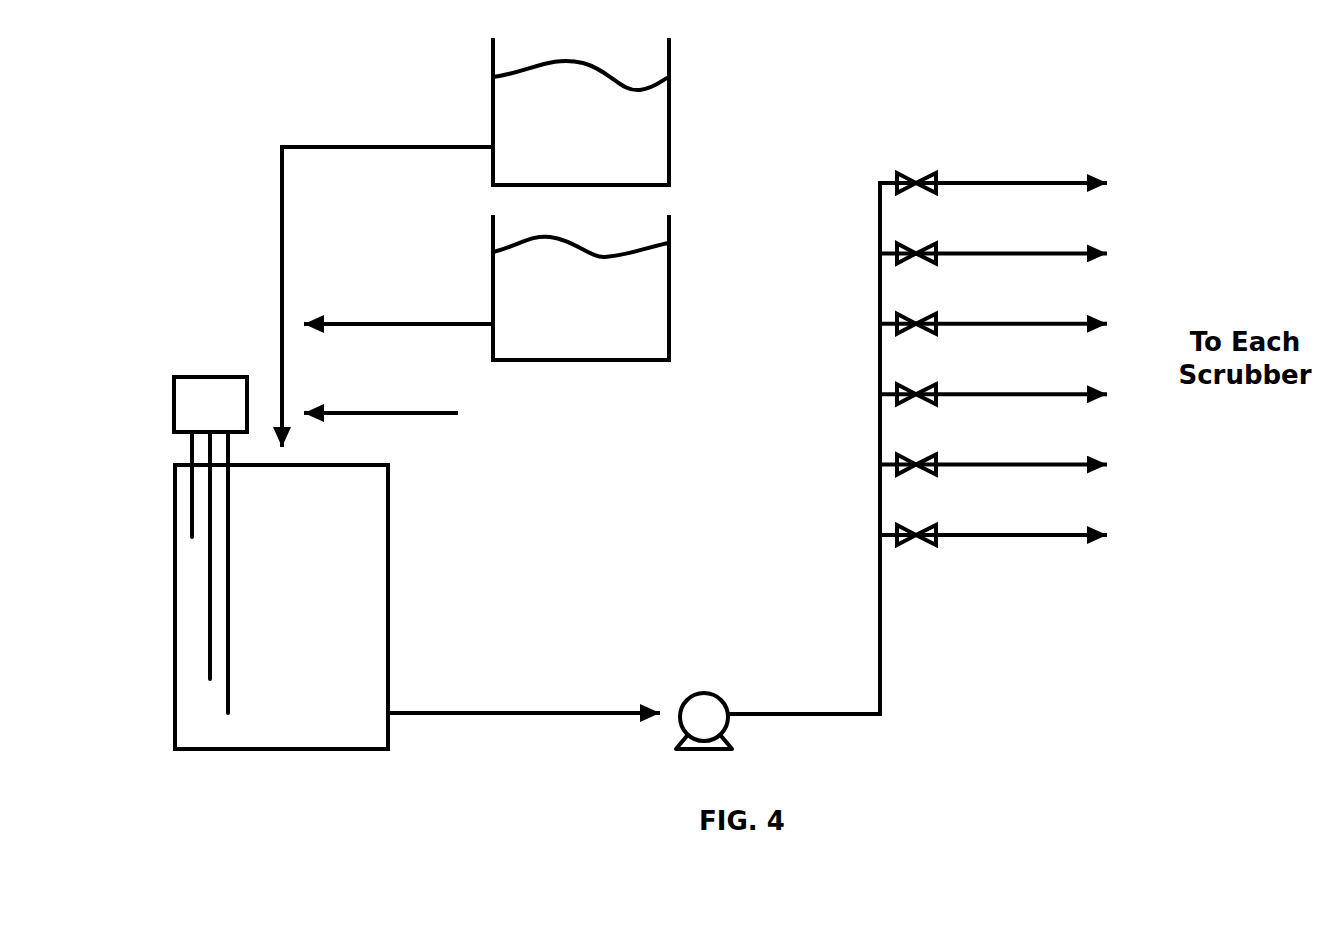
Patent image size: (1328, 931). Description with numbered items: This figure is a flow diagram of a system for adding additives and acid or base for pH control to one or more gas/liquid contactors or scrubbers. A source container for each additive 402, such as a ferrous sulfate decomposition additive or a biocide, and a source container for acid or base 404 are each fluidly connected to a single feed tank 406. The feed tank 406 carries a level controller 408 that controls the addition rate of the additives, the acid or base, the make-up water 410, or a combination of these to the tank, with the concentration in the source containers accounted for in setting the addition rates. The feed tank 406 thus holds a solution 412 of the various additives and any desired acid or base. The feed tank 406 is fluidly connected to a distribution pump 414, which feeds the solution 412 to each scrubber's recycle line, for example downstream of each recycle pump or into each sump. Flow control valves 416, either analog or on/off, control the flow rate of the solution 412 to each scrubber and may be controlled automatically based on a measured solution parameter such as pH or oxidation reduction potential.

The additive source container 402 is at (669, 147).
The acid or base source container 404 is at (669, 333).
The feed tank 406 is at (388, 537).
The level controller 408 is at (210, 377).
The make-up water 410 is at (563, 430).
The solution 412 is at (333, 652).
The distribution pump 414 is at (700, 693).
The flow control valves 416 is at (934, 183).